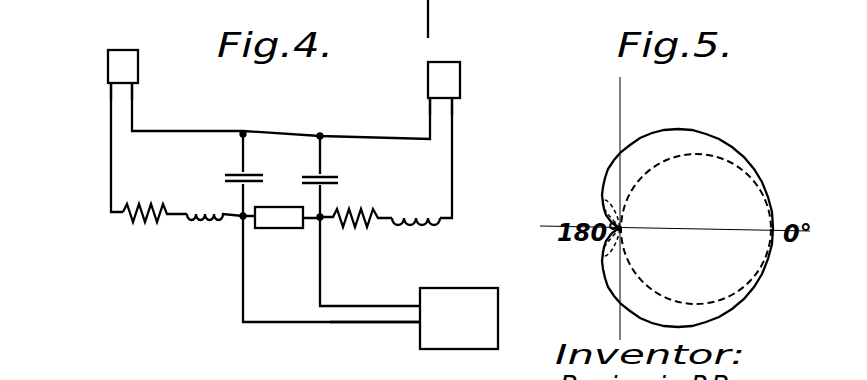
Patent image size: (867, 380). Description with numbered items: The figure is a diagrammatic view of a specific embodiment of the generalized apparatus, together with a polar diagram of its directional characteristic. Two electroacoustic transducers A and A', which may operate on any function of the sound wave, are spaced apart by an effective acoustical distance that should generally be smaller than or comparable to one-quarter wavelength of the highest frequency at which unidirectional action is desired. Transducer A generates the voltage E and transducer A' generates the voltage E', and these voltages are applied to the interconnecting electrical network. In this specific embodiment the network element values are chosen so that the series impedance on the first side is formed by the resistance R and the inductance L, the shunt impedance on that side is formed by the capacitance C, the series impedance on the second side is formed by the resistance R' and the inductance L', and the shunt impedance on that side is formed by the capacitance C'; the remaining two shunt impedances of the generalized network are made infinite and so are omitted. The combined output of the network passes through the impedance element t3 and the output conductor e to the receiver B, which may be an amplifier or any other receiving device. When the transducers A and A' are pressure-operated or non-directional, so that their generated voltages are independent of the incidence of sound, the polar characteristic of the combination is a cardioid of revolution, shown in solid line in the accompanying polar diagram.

The electroacoustic transducer A is at (95, 67).
The second electroacoustic transducer A' is at (470, 80).
The voltage generated by transducer A E is at (121, 98).
The voltage generated by transducer A' E' is at (441, 113).
The capacitance of shunt impedance Z2 C is at (231, 172).
The capacitance of shunt impedance Z2' C' is at (332, 180).
The resistance of series impedance Z1 R is at (153, 232).
The inductance of series impedance Z1 L is at (215, 237).
The resistance of series impedance Z1' R' is at (356, 240).
The inductance of series impedance Z1' L' is at (416, 244).
The resistance element t3 is at (287, 226).
The output conductor e is at (375, 317).
The receiver B is at (480, 318).